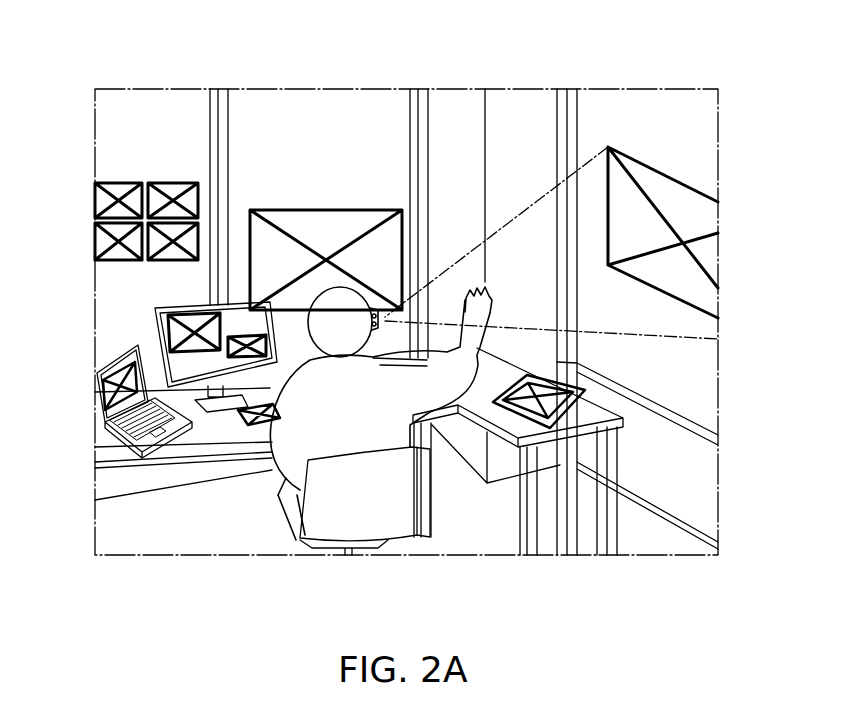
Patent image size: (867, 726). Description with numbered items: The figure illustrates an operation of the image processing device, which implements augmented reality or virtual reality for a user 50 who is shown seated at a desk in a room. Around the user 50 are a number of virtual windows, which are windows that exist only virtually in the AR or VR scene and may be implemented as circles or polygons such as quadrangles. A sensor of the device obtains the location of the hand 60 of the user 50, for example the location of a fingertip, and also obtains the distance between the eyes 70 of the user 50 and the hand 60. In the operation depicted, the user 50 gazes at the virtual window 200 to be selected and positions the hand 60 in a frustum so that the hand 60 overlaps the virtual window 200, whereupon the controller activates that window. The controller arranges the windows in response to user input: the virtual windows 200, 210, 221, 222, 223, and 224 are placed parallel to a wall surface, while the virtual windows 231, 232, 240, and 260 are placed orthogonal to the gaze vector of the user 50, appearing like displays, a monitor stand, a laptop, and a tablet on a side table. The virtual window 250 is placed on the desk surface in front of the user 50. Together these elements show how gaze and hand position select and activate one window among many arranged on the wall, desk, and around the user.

The user 50 is at (328, 311).
The hand 60 is at (487, 283).
The eyes 70 is at (380, 306).
The virtual window 200 is at (704, 218).
The virtual window 210 is at (292, 225).
The virtual window 221 is at (97, 198).
The virtual window 222 is at (167, 185).
The virtual window 223 is at (97, 243).
The virtual window 224 is at (163, 259).
The virtual window 231 is at (172, 332).
The virtual window 232 is at (208, 388).
The virtual window 240 is at (112, 387).
The virtual window 250 is at (270, 412).
The virtual window 260 is at (528, 402).